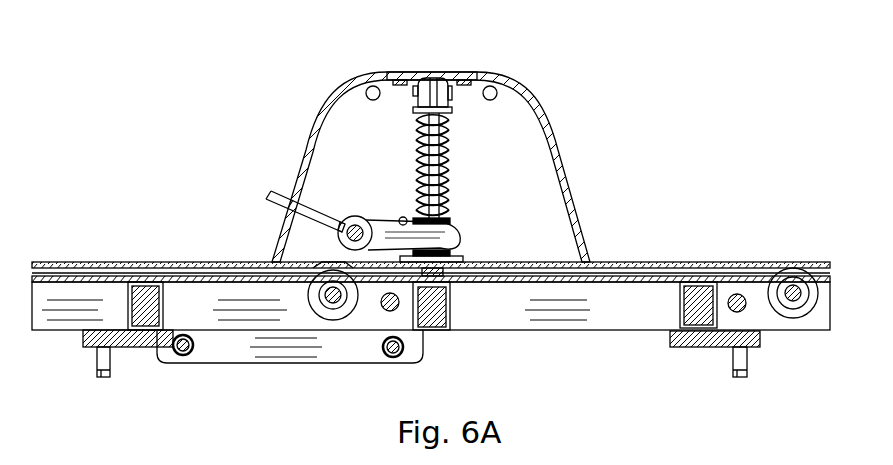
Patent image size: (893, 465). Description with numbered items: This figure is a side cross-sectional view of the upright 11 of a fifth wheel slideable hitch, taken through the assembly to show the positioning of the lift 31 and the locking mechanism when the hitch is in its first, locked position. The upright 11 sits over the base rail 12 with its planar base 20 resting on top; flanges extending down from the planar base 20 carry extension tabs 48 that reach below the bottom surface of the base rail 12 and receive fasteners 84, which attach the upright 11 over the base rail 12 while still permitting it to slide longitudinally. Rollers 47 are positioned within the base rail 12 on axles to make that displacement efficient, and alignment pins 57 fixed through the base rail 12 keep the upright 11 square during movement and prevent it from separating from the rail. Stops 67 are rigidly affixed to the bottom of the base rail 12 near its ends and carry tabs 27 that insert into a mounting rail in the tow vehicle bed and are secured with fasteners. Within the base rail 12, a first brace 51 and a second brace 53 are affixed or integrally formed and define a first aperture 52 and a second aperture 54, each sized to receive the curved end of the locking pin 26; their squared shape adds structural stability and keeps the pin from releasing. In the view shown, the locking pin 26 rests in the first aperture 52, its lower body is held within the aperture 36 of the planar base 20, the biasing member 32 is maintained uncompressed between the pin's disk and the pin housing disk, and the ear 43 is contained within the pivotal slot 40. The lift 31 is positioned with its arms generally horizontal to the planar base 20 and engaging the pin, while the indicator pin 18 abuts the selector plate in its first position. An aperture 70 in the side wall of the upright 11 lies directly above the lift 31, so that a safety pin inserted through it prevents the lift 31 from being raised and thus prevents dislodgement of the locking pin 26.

The upright 11 is at (330, 98).
The base rail 12 is at (593, 282).
The indicator pin 18 is at (272, 197).
The planar base 20 is at (103, 260).
The locking pin 26 is at (443, 183).
The tab 27 is at (100, 375).
The lift 31 is at (380, 217).
The biasing member 32 is at (447, 145).
The aperture 36 is at (466, 253).
The pivotal slot 40 is at (441, 83).
The ear 43 is at (433, 80).
The roller 47 is at (812, 298).
The extension tab 48 is at (207, 363).
The first brace 51 is at (450, 307).
The first base rail aperture 52 is at (434, 336).
The second brace 53 is at (680, 307).
The second base rail aperture 54 is at (698, 350).
The alignment pin 57 is at (397, 309).
The stop 67 is at (137, 348).
The aperture 70 is at (403, 216).
The fastener 84 is at (193, 348).